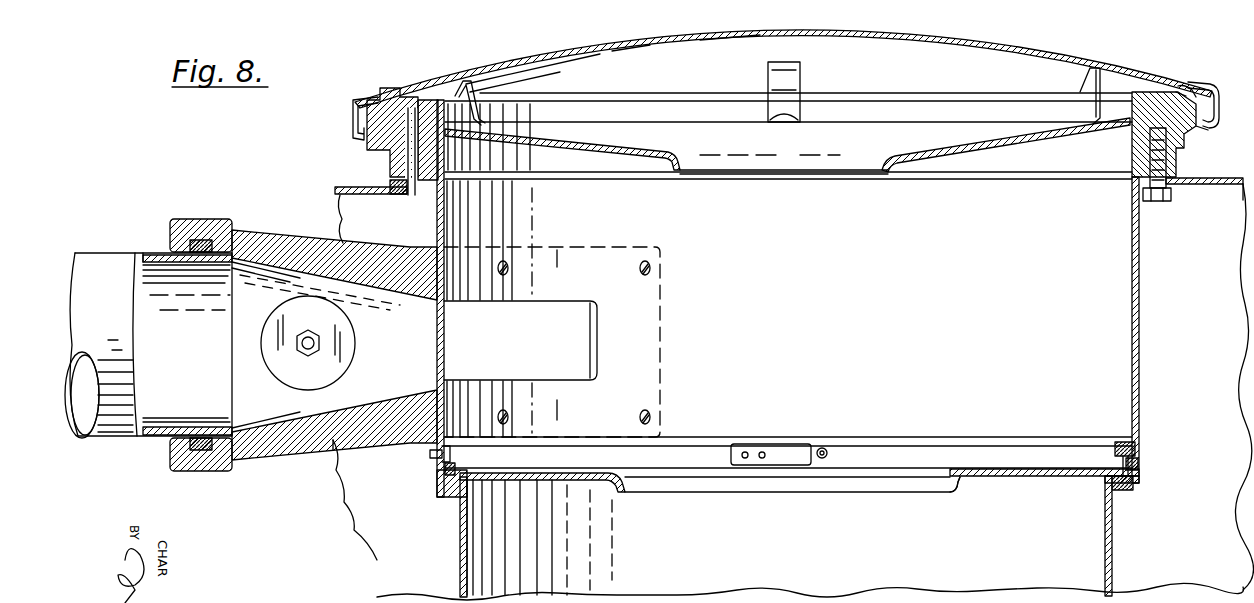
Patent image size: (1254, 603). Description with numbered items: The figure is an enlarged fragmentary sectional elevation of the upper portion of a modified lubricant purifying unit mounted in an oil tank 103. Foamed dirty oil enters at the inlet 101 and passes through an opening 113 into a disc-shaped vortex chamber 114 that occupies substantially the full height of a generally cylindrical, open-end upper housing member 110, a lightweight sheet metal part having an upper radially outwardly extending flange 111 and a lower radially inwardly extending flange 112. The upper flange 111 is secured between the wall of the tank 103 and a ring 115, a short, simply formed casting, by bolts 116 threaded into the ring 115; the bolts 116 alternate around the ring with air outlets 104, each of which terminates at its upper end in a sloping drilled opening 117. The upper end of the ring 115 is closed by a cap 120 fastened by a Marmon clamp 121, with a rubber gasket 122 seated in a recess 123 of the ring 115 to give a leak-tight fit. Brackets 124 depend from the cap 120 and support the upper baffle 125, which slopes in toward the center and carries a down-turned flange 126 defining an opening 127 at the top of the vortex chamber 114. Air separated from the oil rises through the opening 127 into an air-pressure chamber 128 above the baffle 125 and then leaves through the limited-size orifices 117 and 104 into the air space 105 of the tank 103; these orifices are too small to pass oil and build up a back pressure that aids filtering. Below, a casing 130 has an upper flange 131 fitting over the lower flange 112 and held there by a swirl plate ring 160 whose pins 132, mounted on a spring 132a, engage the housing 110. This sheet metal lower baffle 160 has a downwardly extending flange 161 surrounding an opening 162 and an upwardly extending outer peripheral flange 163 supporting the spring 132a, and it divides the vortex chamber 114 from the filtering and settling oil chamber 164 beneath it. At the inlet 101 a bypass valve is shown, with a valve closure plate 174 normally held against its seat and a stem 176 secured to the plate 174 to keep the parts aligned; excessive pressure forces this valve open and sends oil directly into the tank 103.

The inlet 101 is at (243, 425).
The oil tank 103 is at (1207, 186).
The air outlets 104 is at (408, 172).
The air space 105 is at (410, 198).
The upper housing member 110 is at (1141, 308).
The upper radially outwardly extending flange 111 is at (1183, 180).
The lower radially inwardly extending flange 112 is at (1135, 488).
The opening 113 is at (520, 340).
The vortex chamber 114 is at (850, 320).
The ring 115 is at (1184, 158).
The bolts 116 is at (1158, 201).
The sloping drilled opening 117 is at (418, 108).
The cap 120 is at (640, 38).
The Marmon clamp 121 is at (1222, 106).
The rubber gasket 122 is at (1189, 92).
The recess 123 is at (1206, 131).
The brackets 124 is at (485, 88).
The upper baffle 125 is at (1018, 128).
The down-turned flange 126 is at (903, 160).
The opening 127 is at (850, 155).
The air-pressure chamber 128 is at (690, 64).
The casing 130 is at (1113, 580).
The upper flange 131 is at (1141, 476).
The pins 132 is at (843, 437).
The spring 132a is at (790, 445).
The swirl plate ring 160 is at (1022, 467).
The downwardly extending flange 161 is at (955, 486).
The opening 162 is at (872, 490).
The upwardly extending outer peripheral flange 163 is at (458, 470).
The filtering and settling oil chamber 164 is at (524, 348).
The valve closure plate 174 is at (345, 334).
The stem 176 is at (304, 356).